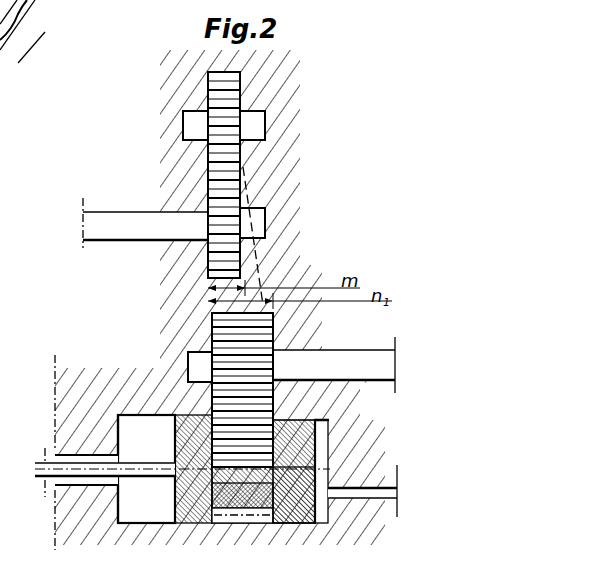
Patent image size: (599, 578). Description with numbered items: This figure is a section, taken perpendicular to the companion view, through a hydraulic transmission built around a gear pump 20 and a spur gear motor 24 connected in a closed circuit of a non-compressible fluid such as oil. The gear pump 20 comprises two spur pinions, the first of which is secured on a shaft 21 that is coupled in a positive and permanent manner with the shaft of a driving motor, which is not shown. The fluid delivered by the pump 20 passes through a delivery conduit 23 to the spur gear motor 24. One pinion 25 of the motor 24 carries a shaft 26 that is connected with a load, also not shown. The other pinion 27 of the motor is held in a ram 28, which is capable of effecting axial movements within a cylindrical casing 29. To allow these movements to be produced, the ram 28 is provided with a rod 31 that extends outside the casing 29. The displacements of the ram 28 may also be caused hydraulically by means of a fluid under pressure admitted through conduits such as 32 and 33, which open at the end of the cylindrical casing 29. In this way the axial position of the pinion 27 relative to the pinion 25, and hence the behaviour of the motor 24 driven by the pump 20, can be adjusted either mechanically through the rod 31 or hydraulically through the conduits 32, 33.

The gear pump 20 is at (234, 166).
The shaft 21 is at (120, 217).
The delivery conduit 23 is at (257, 263).
The spur gear motor 24 is at (0, 64).
The pinion 25 is at (260, 330).
The shaft 26 is at (385, 365).
The other pinion 27 is at (322, 422).
The ram 28 is at (290, 445).
The cylindrical casing 29 is at (327, 472).
The rod 31 is at (83, 467).
The conduit 32 is at (373, 497).
The conduit 33 is at (80, 480).